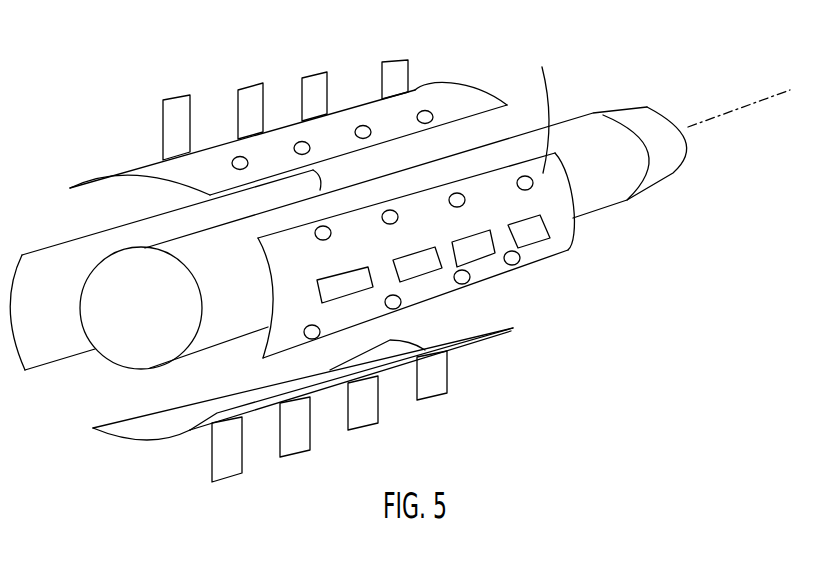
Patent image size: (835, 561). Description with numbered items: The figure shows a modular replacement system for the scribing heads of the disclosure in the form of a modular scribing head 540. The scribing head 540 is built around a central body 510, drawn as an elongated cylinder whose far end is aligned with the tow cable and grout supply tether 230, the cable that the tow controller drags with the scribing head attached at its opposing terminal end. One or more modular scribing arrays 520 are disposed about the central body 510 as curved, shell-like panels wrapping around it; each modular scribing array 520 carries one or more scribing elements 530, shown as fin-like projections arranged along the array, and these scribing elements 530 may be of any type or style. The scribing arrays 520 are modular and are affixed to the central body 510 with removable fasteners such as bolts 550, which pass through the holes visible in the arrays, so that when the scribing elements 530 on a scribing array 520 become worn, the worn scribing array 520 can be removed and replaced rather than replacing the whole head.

The tow cable and grout supply tether 230 is at (733, 112).
The central body 510 is at (117, 345).
The modular scribing array 520 is at (482, 107).
The scribing element 530 is at (187, 118).
The modular scribing head 540 is at (104, 100).
The bolt 550 is at (314, 233).